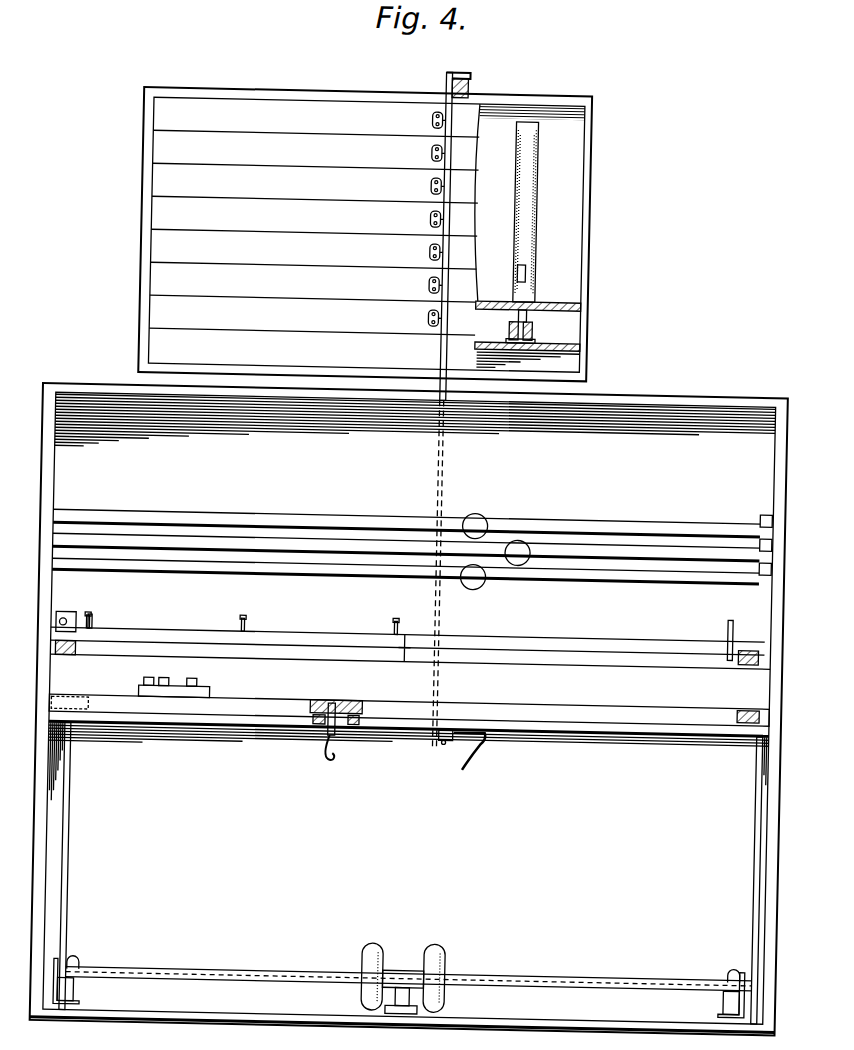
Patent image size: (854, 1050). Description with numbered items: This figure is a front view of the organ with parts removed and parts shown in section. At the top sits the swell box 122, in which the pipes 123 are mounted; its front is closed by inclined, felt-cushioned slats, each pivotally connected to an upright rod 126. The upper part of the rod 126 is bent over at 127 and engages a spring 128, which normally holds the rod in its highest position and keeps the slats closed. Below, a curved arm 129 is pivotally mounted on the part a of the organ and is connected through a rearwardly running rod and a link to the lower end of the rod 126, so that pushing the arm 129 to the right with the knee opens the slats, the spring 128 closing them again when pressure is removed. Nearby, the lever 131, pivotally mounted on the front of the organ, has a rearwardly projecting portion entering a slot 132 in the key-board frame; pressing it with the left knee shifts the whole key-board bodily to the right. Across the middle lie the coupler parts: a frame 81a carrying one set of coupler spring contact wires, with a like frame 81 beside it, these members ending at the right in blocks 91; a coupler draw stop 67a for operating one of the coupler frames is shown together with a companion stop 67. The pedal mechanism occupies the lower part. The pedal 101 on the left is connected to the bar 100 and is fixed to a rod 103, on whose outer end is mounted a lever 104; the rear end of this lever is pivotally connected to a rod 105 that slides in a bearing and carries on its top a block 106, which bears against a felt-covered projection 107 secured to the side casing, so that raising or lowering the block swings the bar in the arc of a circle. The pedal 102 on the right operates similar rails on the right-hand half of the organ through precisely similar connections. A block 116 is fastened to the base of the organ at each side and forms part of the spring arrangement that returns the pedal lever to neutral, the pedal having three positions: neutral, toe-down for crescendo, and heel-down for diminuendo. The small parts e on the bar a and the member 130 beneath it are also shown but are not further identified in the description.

The roller 67 is at (491, 558).
The coupler draw stop 67a is at (487, 512).
The guide rod 81 is at (626, 541).
The coupler frame 81a is at (635, 501).
The bearing block 91 is at (763, 510).
The bar 100 is at (298, 633).
The pedal 101 is at (384, 946).
The pedal 102 is at (450, 954).
The rod 103 is at (228, 970).
The lever 104 is at (82, 961).
The rod 105 is at (78, 868).
The block 106 is at (100, 619).
The felt covered projection 107 is at (73, 621).
The block 116 is at (93, 988).
The swell box 122 is at (588, 234).
The pipes 123 is at (530, 190).
The upright rod 126 is at (437, 295).
The bent-over upper part 127 is at (463, 67).
The spring 128 is at (465, 84).
The curved arm 129 is at (474, 757).
The latch 130 is at (455, 738).
The lever 131 is at (337, 758).
The slot 132 is at (329, 695).
The part of the organ a is at (519, 703).
The contact blocks e is at (192, 690).